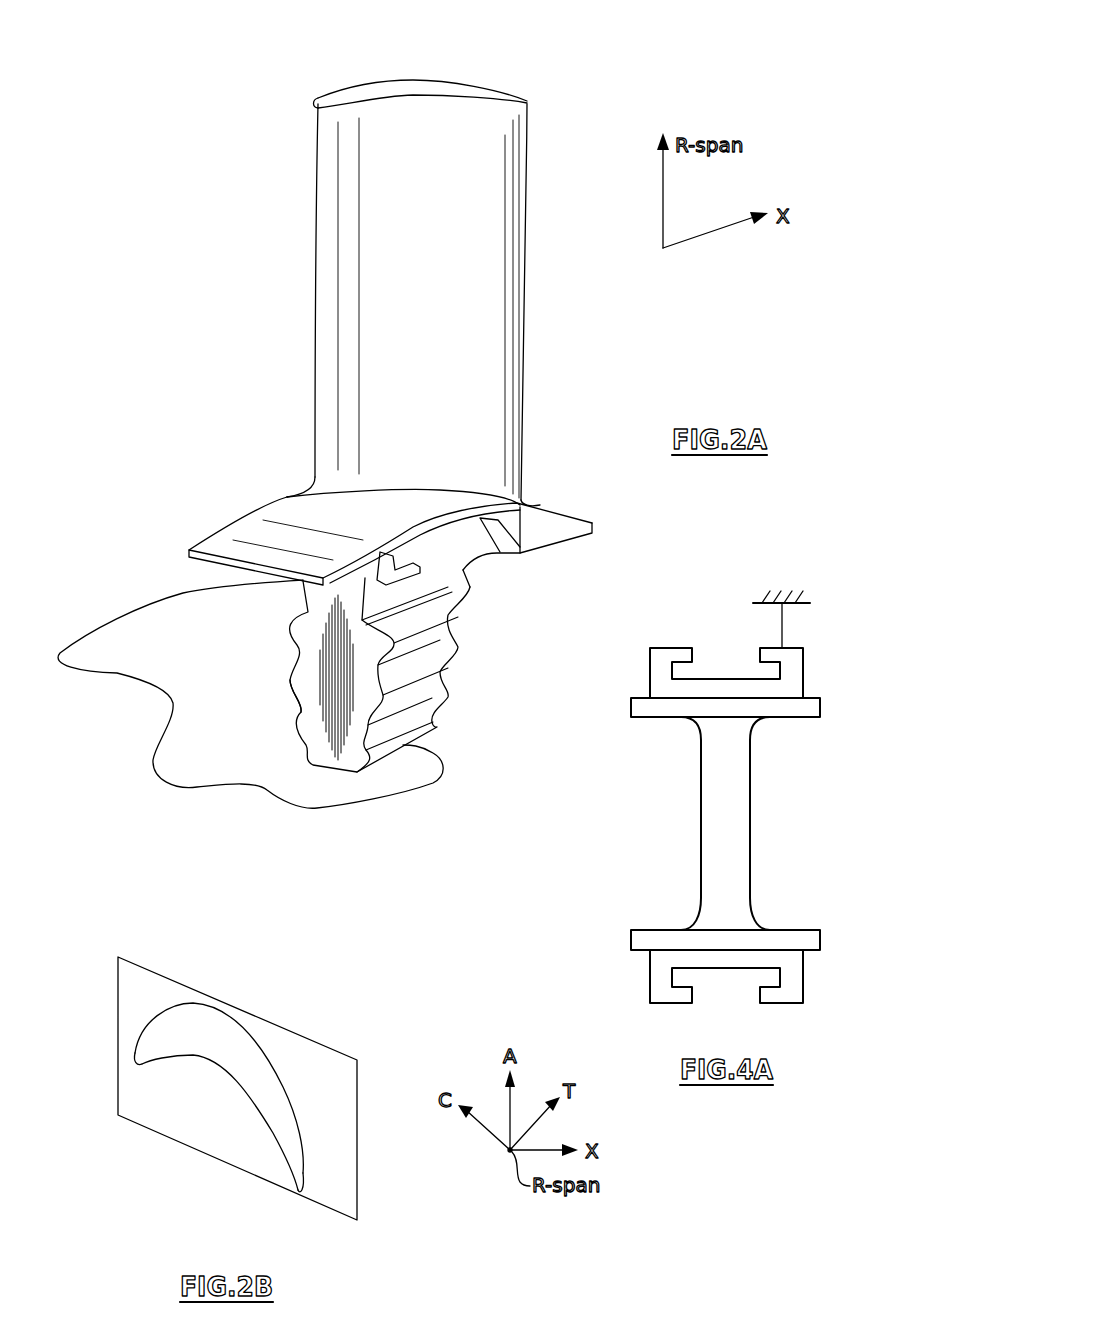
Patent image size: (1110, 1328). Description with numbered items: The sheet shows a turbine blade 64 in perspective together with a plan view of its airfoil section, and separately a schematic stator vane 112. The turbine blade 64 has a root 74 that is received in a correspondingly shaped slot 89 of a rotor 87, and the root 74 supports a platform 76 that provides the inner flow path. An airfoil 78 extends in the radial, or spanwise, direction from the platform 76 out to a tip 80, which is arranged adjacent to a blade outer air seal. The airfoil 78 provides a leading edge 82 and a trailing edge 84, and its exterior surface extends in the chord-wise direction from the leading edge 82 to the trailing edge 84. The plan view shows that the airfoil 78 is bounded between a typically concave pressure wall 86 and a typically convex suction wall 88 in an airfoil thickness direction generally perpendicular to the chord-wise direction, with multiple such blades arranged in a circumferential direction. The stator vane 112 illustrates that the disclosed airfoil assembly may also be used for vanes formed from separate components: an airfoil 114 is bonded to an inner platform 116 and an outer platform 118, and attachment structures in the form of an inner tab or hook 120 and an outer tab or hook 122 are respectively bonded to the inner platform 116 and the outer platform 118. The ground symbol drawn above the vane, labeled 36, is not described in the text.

In FIG. 2A, the turbine blade 64 is at (288, 252).
In FIG. 2B, the turbine blade 64 is at (333, 985).
In FIG. 2A, the root 74 is at (318, 676).
In FIG. 2A, the platform 76 is at (430, 497).
In FIG. 2B, the platform 76 is at (182, 965).
In FIG. 2A, the airfoil 78 is at (480, 385).
In FIG. 2B, the airfoil 78 is at (128, 1080).
In FIG. 2A, the tip 80 is at (332, 96).
In FIG. 2A, the leading edge 82 is at (316, 252).
In FIG. 2B, the leading edge 82 is at (133, 1052).
In FIG. 2A, the trailing edge 84 is at (527, 240).
In FIG. 2B, the trailing edge 84 is at (300, 1195).
In FIG. 2A, the pressure wall 86 is at (448, 300).
In FIG. 2B, the pressure wall 86 is at (226, 1073).
In FIG. 2A, the rotor 87 is at (178, 730).
In FIG. 2A, the suction wall 88 is at (455, 68).
In FIG. 2B, the suction wall 88 is at (238, 1014).
In FIG. 2A, the slot 89 is at (300, 685).
In FIG. 4A, the engine static structure / ground 36 is at (803, 605).
In FIG. 4A, the stator vane 112 is at (810, 760).
In FIG. 4A, the airfoil 114 is at (752, 812).
In FIG. 4A, the inner platform 116 is at (631, 938).
In FIG. 4A, the outer platform 118 is at (631, 710).
In FIG. 4A, the inner tab or hook 120 is at (650, 978).
In FIG. 4A, the outer tab or hook 122 is at (650, 668).